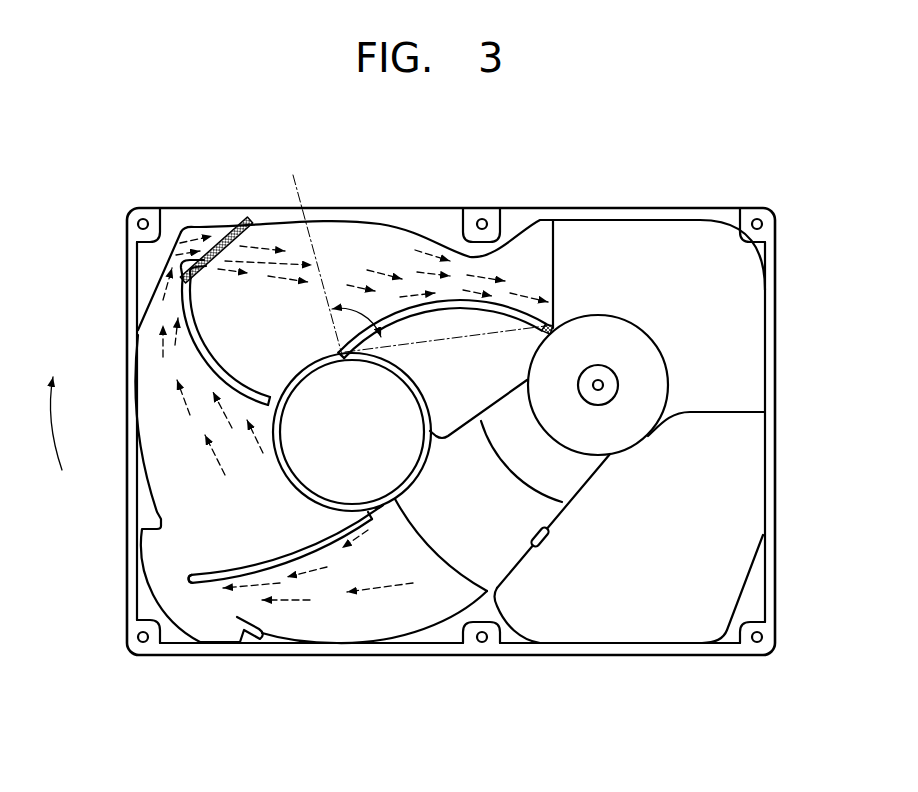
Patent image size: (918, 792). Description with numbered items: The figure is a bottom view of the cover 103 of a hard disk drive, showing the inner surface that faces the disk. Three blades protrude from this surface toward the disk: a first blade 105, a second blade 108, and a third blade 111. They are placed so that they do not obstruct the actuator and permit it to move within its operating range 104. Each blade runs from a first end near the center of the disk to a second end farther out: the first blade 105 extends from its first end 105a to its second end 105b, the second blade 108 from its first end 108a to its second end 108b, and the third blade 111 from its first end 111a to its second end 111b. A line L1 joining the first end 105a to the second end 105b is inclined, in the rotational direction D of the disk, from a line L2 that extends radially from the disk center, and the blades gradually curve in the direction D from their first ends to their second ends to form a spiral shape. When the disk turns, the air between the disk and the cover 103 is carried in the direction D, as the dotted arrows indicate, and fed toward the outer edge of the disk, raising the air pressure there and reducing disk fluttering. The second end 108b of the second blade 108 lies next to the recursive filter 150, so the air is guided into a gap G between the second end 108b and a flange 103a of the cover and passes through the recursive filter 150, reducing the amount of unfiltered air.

The cover 103 is at (707, 655).
The flange 103a is at (137, 294).
The operating range 104 is at (493, 542).
The first blade 105 is at (458, 300).
The first end 105a is at (340, 356).
The second end 105b is at (553, 326).
The second blade 108 is at (190, 348).
The first end 108a is at (268, 398).
The second end 108b is at (172, 275).
The third blade 111 is at (302, 575).
The first end 111a is at (385, 506).
The second end 111b is at (195, 578).
The recursive filter 150 is at (240, 228).
The gap G is at (184, 262).
The line L1 is at (474, 340).
The line L2 is at (317, 248).
The rotational direction D is at (58, 439).